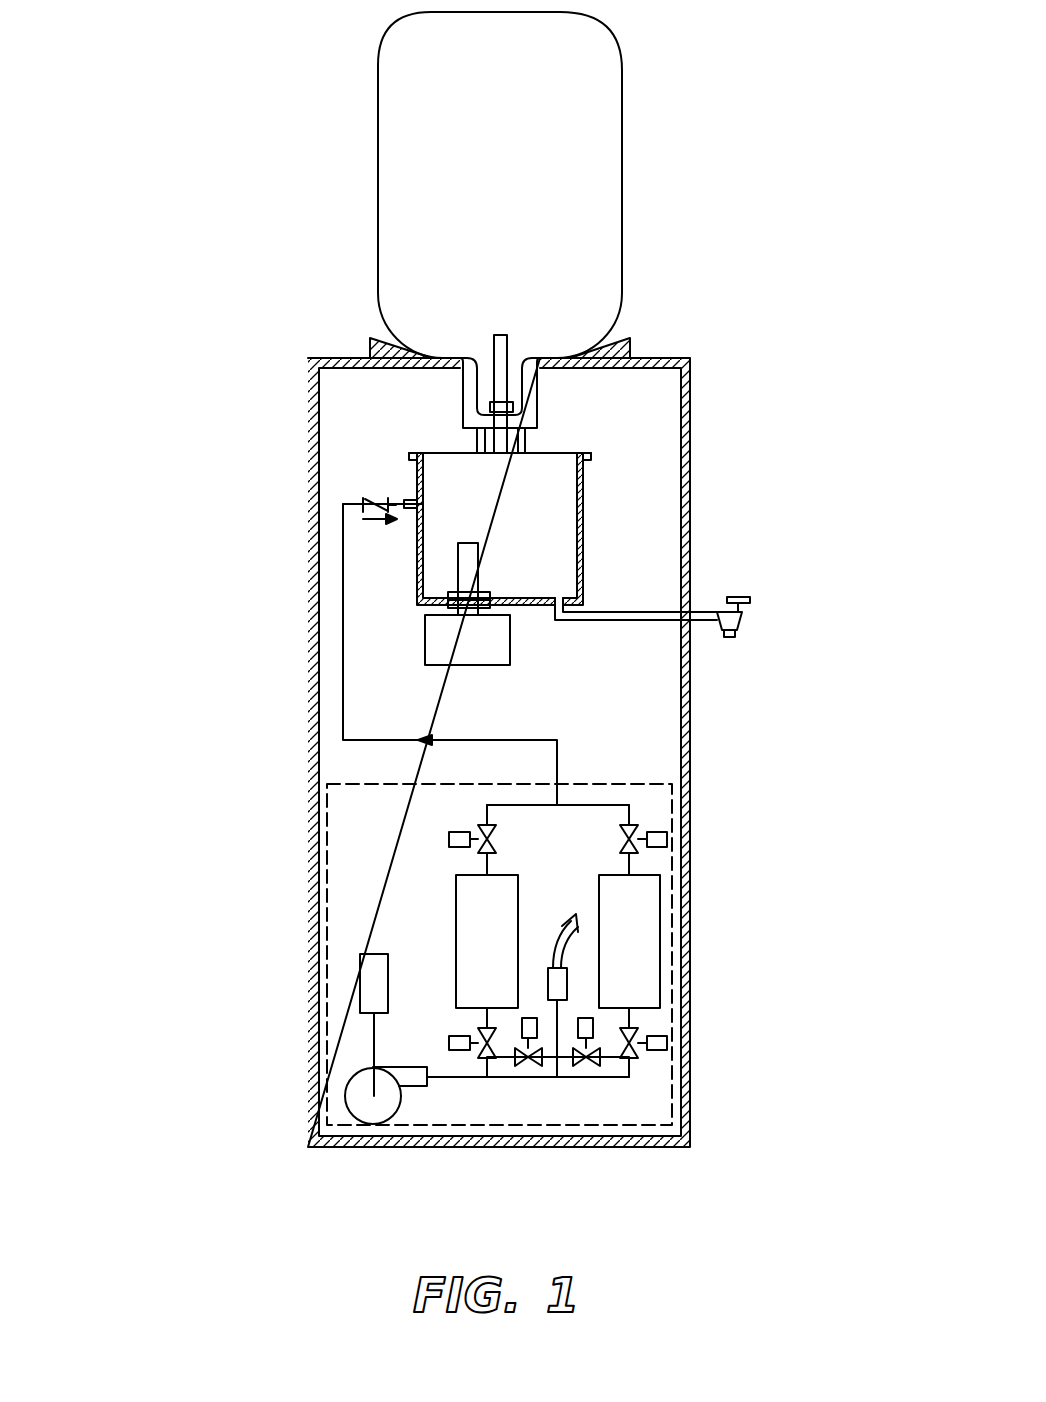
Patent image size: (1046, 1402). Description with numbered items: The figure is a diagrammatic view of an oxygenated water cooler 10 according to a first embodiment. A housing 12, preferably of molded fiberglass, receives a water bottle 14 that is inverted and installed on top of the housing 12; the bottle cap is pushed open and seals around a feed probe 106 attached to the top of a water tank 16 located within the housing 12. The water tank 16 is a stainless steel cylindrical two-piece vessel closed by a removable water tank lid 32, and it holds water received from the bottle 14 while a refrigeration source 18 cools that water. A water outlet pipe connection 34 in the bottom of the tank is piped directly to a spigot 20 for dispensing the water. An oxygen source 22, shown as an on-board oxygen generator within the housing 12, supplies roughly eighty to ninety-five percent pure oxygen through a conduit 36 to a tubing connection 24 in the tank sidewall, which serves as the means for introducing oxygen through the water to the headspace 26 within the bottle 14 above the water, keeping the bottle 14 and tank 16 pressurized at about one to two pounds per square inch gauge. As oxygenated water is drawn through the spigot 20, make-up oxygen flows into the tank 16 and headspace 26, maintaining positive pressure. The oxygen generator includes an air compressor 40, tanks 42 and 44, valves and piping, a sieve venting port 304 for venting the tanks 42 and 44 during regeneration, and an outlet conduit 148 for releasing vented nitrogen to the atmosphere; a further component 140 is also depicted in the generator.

The oxygenated water cooler 10 is at (156, 383).
The housing 12 is at (313, 618).
The water bottle 14 is at (378, 293).
The water tank 16 is at (583, 513).
The refrigeration source 18 is at (512, 643).
The spigot 20 is at (735, 622).
The oxygen source 22 is at (678, 824).
The tubing connection 24 is at (415, 505).
The headspace 26 is at (588, 67).
The water tank lid 32 is at (553, 453).
The water outlet pipe connection 34 is at (623, 615).
The conduit 36 is at (343, 694).
The air compressor 40 is at (357, 1097).
The tank 42 is at (468, 930).
The tank 44 is at (645, 915).
The feed probe 106 is at (500, 347).
The sensor 140 is at (578, 986).
The outlet conduit 148 is at (568, 933).
The sieve venting port 304 is at (557, 1077).